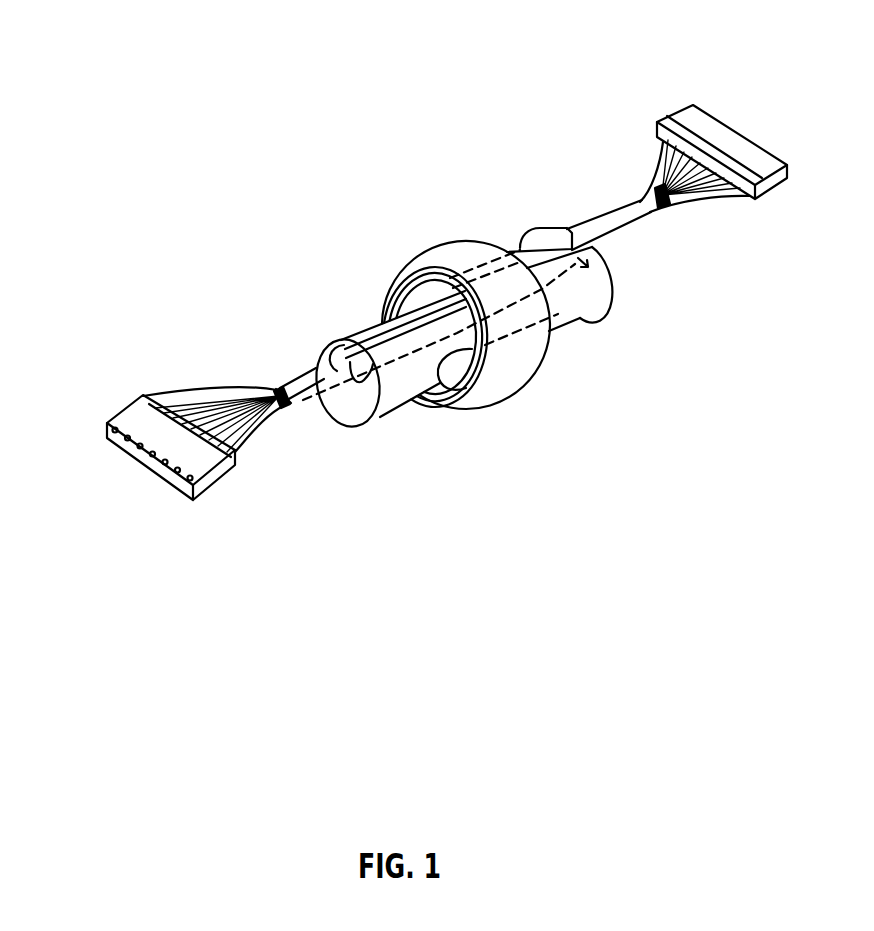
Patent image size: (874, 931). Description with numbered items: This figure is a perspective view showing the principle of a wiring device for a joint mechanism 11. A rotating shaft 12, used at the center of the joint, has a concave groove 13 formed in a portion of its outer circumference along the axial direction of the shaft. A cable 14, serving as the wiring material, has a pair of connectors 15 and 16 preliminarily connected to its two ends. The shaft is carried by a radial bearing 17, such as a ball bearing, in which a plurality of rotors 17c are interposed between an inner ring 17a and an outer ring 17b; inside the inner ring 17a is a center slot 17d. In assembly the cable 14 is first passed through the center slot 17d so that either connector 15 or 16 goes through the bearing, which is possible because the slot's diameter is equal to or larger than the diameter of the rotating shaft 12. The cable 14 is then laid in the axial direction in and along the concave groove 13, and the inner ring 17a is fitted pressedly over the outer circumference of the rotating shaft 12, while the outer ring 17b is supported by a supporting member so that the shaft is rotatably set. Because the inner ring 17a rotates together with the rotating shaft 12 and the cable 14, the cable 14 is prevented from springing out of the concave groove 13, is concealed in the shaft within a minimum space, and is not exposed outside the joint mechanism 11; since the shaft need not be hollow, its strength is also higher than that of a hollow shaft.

The joint mechanism 11 is at (442, 206).
The rotating shaft 12 is at (392, 404).
The concave groove 13 is at (352, 378).
The cable 14 is at (272, 300).
The connector 15 is at (737, 147).
The connector 16 is at (167, 445).
The radial bearing 17 is at (693, 487).
The inner ring 17a is at (463, 386).
The outer ring 17b is at (537, 368).
The rotors 17c is at (500, 380).
The center slot 17d is at (441, 392).